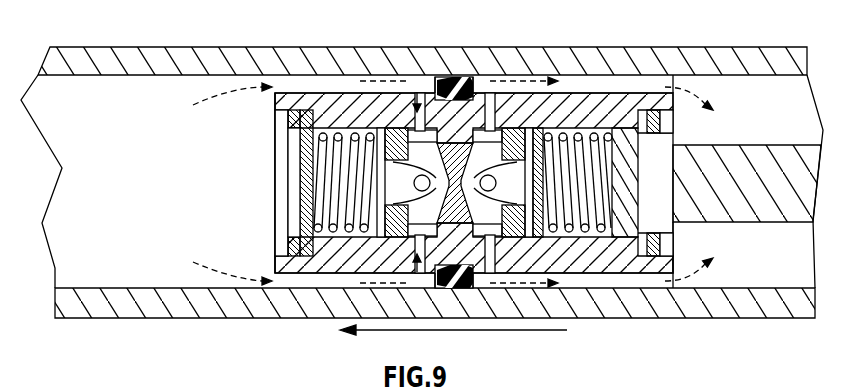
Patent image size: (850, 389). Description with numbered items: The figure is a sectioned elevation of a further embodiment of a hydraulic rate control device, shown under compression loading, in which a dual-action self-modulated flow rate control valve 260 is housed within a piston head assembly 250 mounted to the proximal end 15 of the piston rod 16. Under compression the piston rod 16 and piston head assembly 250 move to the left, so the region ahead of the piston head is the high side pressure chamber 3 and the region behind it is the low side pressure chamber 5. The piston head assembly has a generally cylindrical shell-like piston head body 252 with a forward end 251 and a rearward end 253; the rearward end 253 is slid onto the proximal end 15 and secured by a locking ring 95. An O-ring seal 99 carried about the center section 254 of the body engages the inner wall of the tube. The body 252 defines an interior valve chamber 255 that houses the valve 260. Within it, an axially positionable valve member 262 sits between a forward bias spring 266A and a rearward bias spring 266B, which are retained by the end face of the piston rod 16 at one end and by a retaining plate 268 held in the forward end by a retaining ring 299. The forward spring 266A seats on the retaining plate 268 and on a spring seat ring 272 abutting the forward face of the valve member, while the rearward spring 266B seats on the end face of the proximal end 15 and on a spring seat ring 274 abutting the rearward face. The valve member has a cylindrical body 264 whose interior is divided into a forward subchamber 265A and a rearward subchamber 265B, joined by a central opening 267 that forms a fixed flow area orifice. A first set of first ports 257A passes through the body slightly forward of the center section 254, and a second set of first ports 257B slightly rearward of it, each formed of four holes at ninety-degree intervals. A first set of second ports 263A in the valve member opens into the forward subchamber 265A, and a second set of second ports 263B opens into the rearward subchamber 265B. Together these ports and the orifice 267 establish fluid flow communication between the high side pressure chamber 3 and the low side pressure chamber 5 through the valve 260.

The high side pressure chamber 3 is at (187, 195).
The low side pressure chamber 5 is at (794, 136).
The proximal end 15 is at (727, 192).
The piston rod 16 is at (750, 222).
The locking ring 95 is at (662, 107).
The O-ring seal 99 is at (453, 133).
The piston head assembly 250 is at (275, 290).
The forward end 251 is at (283, 93).
The piston head body 252 is at (594, 97).
The rearward end 253 is at (652, 275).
The center section 254 is at (412, 85).
The valve chamber 255 is at (593, 240).
The first set of first ports 257A is at (417, 248).
The second set of first ports 257B is at (503, 247).
The flow rate control valve 260 is at (473, 100).
The valve member 262 is at (452, 290).
The first set of second ports 263A is at (414, 184).
The second set of second ports 263B is at (496, 183).
The cylindrical body 264 is at (400, 128).
The forward subchamber 265A is at (318, 158).
The rearward subchamber 265B is at (533, 172).
The forward bias spring 266A is at (380, 192).
The rearward bias spring 266B is at (612, 190).
The central opening 267 is at (452, 77).
The retaining plate 268 is at (301, 136).
The spring seat ring 272 is at (285, 106).
The spring seat ring 274 is at (564, 100).
The retaining ring 299 is at (280, 256).